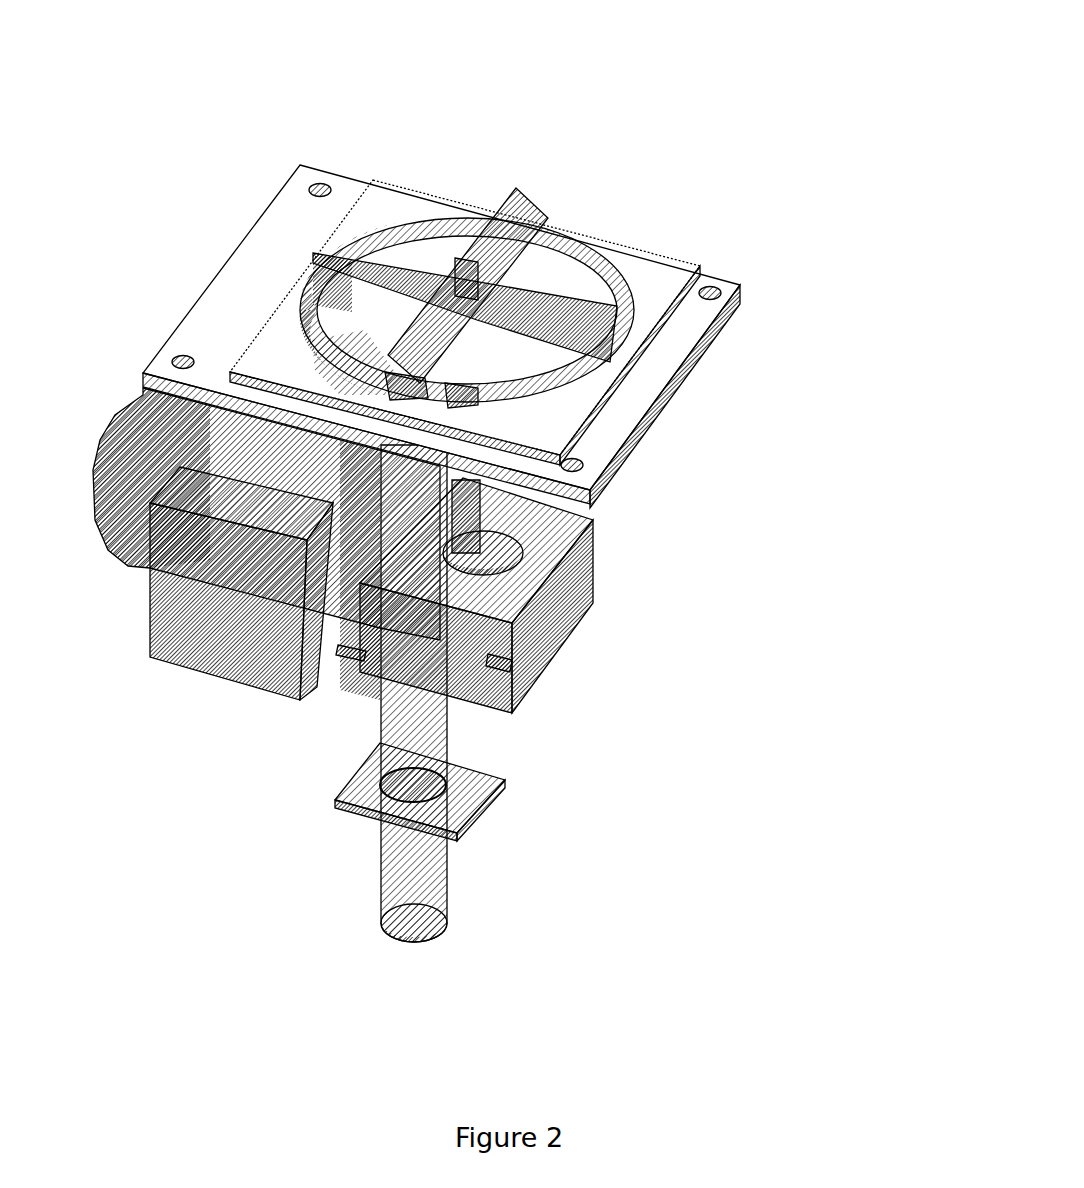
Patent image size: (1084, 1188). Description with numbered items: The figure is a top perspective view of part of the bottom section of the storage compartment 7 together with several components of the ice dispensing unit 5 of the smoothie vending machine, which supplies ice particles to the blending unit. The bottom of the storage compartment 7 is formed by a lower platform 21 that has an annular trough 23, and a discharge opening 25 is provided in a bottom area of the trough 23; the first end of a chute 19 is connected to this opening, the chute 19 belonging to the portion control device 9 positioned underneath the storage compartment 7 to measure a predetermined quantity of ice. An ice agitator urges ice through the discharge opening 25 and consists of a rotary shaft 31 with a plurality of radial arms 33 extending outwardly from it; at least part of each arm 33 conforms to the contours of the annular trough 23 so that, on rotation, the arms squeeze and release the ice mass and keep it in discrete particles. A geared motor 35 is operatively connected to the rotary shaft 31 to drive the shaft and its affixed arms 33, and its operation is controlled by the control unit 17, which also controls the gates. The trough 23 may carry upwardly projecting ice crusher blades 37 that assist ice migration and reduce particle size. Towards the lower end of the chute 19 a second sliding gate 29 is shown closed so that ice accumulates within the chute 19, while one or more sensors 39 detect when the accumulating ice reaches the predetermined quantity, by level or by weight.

The ice dispensing unit 5 is at (795, 560).
The storage compartment 7 is at (617, 181).
The portion control device 9 is at (472, 732).
The control unit 17 is at (183, 624).
The chute 19 is at (383, 870).
The lower platform 21 is at (670, 273).
The annular trough 23 is at (573, 281).
The discharge opening 25 is at (423, 408).
The second sliding gate 29 is at (355, 790).
The rotary shaft 31 is at (465, 257).
The radial arms 33 is at (533, 210).
The geared motor 35 is at (560, 610).
The ice crusher blades 37 is at (478, 392).
The sensors 39 is at (353, 643).